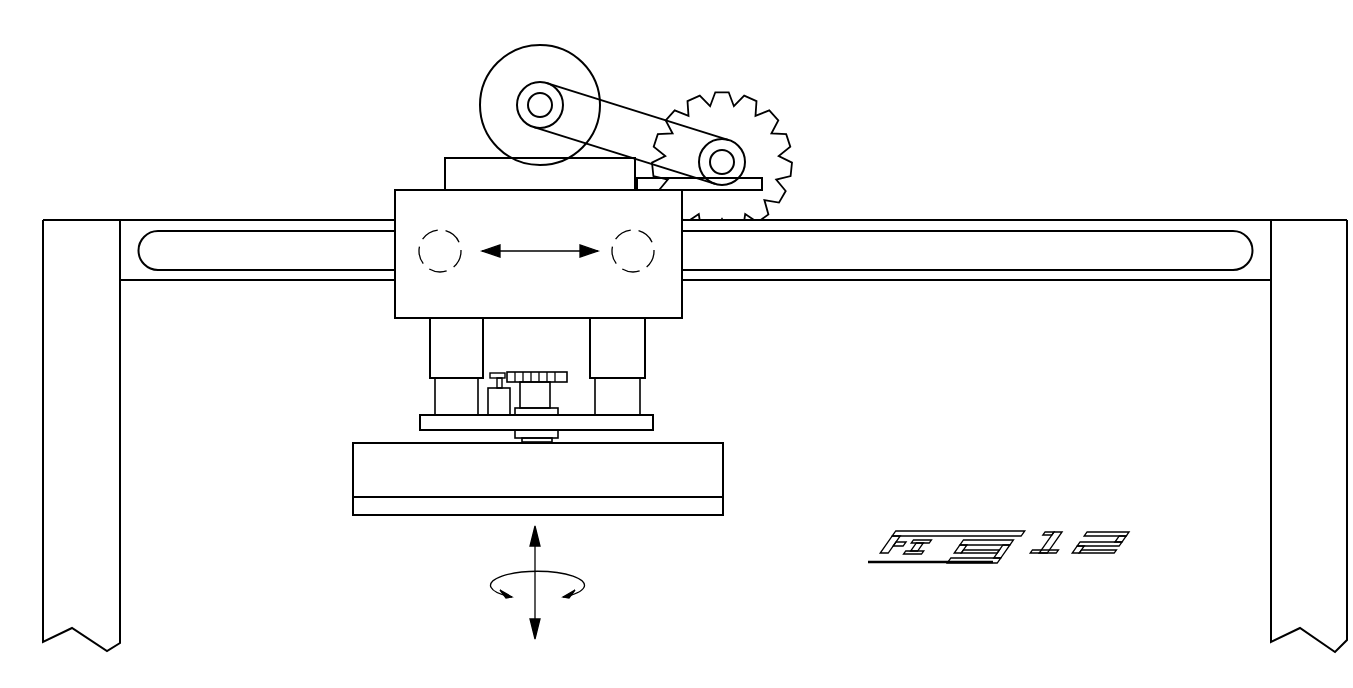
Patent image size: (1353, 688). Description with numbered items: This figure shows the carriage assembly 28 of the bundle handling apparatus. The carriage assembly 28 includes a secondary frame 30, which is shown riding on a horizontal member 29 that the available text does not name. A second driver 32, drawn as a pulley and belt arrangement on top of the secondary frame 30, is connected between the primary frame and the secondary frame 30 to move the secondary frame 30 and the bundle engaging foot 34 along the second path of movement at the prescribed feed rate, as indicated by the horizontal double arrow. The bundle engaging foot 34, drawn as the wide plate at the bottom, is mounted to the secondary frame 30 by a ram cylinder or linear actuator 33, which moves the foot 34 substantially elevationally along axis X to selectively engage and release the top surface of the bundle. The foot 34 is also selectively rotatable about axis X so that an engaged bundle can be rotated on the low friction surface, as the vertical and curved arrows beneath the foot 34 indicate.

The carriage assembly 28 is at (918, 44).
The guide rail 29 is at (1062, 220).
The secondary frame 30 is at (413, 298).
The second driver 32 is at (497, 95).
The linear actuator 33 is at (620, 350).
The bundle engaging foot 34 is at (382, 468).